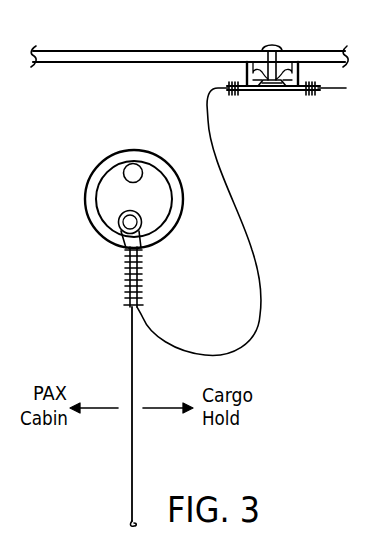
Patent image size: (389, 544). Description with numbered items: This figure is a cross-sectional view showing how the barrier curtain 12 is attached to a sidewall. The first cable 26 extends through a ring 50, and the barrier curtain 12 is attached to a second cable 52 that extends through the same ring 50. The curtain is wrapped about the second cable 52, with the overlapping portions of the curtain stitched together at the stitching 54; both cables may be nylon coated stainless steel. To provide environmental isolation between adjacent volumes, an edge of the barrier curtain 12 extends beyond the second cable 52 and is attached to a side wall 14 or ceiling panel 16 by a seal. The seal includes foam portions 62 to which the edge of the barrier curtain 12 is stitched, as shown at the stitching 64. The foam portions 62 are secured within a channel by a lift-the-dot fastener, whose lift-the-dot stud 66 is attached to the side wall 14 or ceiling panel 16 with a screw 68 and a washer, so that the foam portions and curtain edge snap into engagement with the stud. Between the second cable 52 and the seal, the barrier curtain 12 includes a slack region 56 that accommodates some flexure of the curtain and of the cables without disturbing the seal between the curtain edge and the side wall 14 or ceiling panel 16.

The side wall 14 is at (189, 40).
The ceiling panel 16 is at (119, 50).
The screw 68 is at (272, 46).
The foam portions 62 is at (285, 77).
The lift-the-dot stud 66 is at (278, 92).
The stitching 64 is at (240, 96).
The slack region 56 is at (262, 306).
The ring 50 is at (130, 151).
The first cable 26 is at (124, 178).
The second cable 52 is at (119, 223).
The stitching of overlapping portions 54 is at (127, 272).
The barrier curtain 12 is at (131, 497).